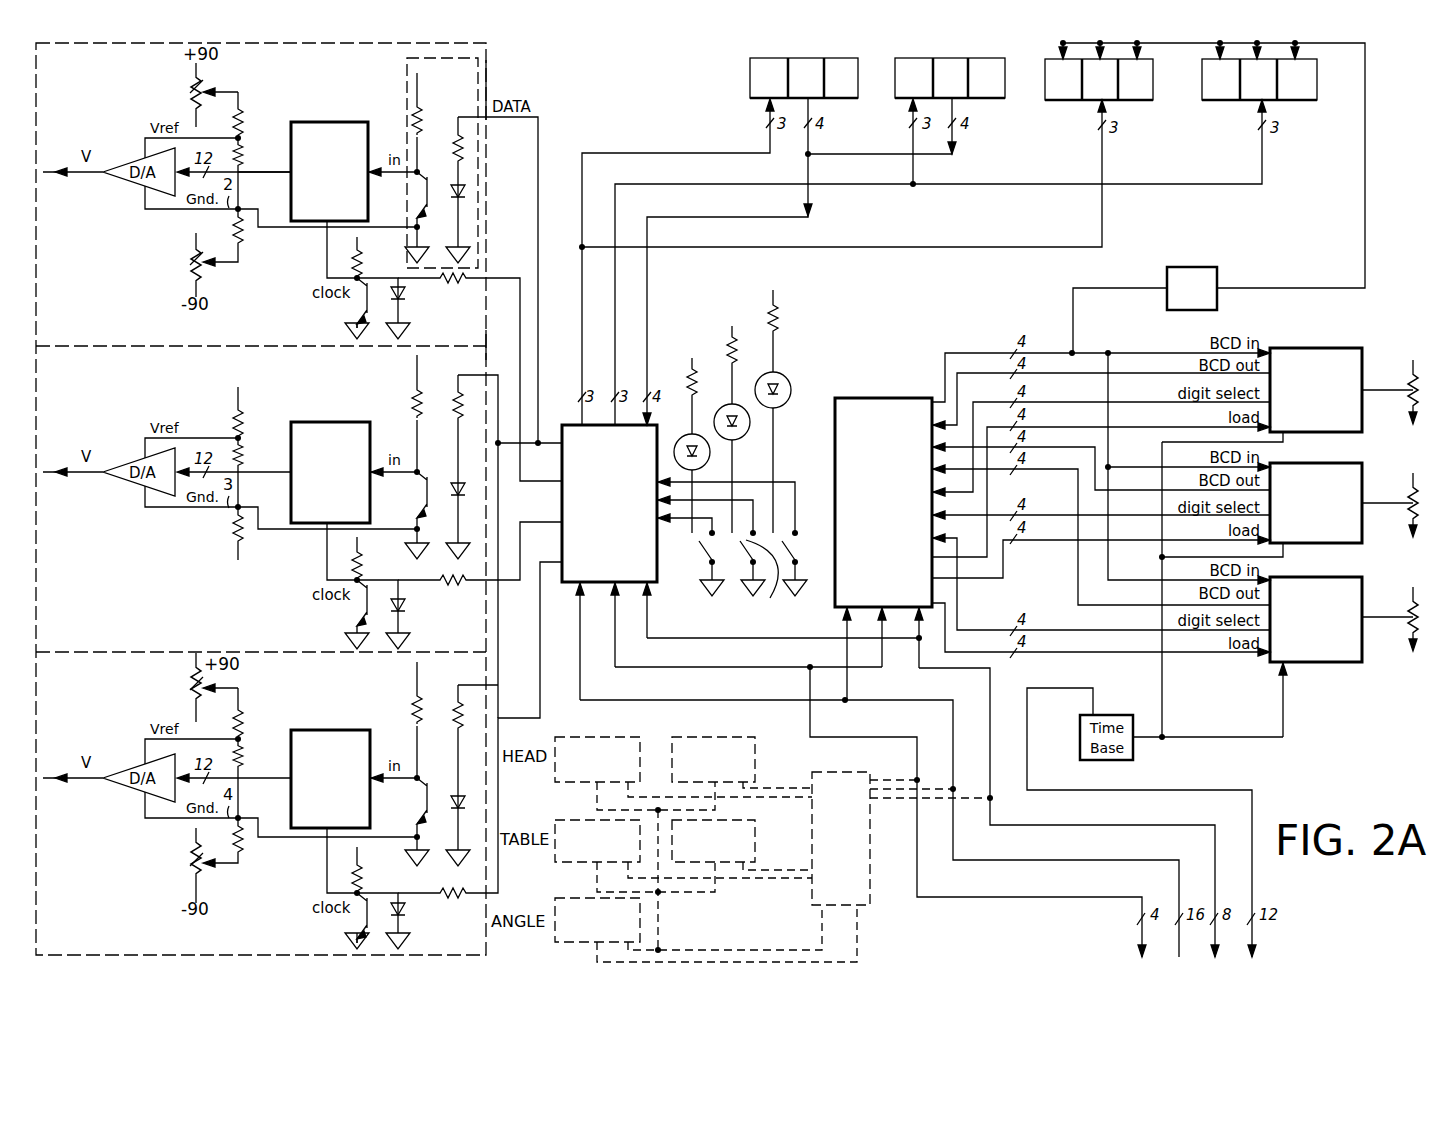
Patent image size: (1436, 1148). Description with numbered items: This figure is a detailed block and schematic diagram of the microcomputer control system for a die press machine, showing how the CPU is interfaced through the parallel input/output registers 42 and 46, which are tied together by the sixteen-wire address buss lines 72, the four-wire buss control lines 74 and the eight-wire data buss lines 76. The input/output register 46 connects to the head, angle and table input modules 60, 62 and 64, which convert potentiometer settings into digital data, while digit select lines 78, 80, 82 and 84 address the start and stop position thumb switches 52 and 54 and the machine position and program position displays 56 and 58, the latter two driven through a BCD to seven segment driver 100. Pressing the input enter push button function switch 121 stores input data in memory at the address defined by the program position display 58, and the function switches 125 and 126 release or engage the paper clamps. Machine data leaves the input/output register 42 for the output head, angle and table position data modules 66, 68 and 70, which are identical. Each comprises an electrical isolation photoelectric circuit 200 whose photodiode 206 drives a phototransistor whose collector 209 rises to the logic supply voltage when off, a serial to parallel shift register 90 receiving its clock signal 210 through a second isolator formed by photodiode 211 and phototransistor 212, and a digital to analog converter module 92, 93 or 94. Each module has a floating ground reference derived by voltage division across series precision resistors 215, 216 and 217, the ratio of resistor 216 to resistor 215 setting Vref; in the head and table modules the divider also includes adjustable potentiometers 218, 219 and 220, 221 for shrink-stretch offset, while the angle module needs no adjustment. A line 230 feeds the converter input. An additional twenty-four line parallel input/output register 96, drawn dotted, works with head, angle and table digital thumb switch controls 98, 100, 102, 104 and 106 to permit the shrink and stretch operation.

The input/output parallel register 42 is at (574, 425).
The input/output parallel register 46 is at (857, 398).
The start position thumb switch control 52 is at (750, 65).
The stop position thumb switch control 54 is at (897, 66).
The machine position display counter 56 is at (1045, 92).
The program position display counter 58 is at (1306, 100).
The input module 60 is at (1342, 349).
The input module 62 is at (1358, 464).
The input module 64 is at (1358, 577).
The output head position data module 66 is at (480, 65).
The output angle position data module 68 is at (487, 355).
The output table position data module 70 is at (488, 942).
The address buss lines 72 is at (904, 700).
The buss control lines 74 is at (810, 719).
The data buss lines 76 is at (990, 694).
The digit select lines 78 is at (671, 153).
The digit select lines 80 is at (675, 185).
The digit select lines 82 is at (982, 247).
The digit select lines 84 is at (1178, 184).
The serial to parallel shift register 90 is at (344, 122).
The digital to analog converter module 92 is at (112, 178).
The digital to analog converter module 93 is at (112, 478).
The digital to analog converter module 94 is at (108, 784).
The parallel input/output register 96 is at (866, 905).
The digital thumb switch control 98 is at (607, 737).
The digital thumb switch control 100 is at (1206, 272).
The digital thumb switch control 102 is at (568, 898).
The digital thumb switch control 104 is at (568, 820).
The digital thumb switch control 106 is at (753, 841).
The push button function switch 121 is at (702, 555).
The function switch 125 is at (720, 467).
The function switch 126 is at (792, 542).
The electrical isolation photoelectric circuit 200 is at (488, 90).
The photodiode 206 is at (468, 185).
The collector 209 is at (425, 158).
The clock signal 210 is at (327, 262).
The photodiode 211 is at (400, 296).
The phototransistor 212 is at (330, 314).
The precision resistor 215 is at (240, 112).
The precision resistor 216 is at (240, 158).
The precision resistor 217 is at (240, 244).
The adjustable potentiometer 218 is at (188, 88).
The adjustable potentiometer 219 is at (188, 258).
The potentiometer 220 is at (188, 682).
The potentiometer 221 is at (188, 868).
The input line 230 is at (284, 196).